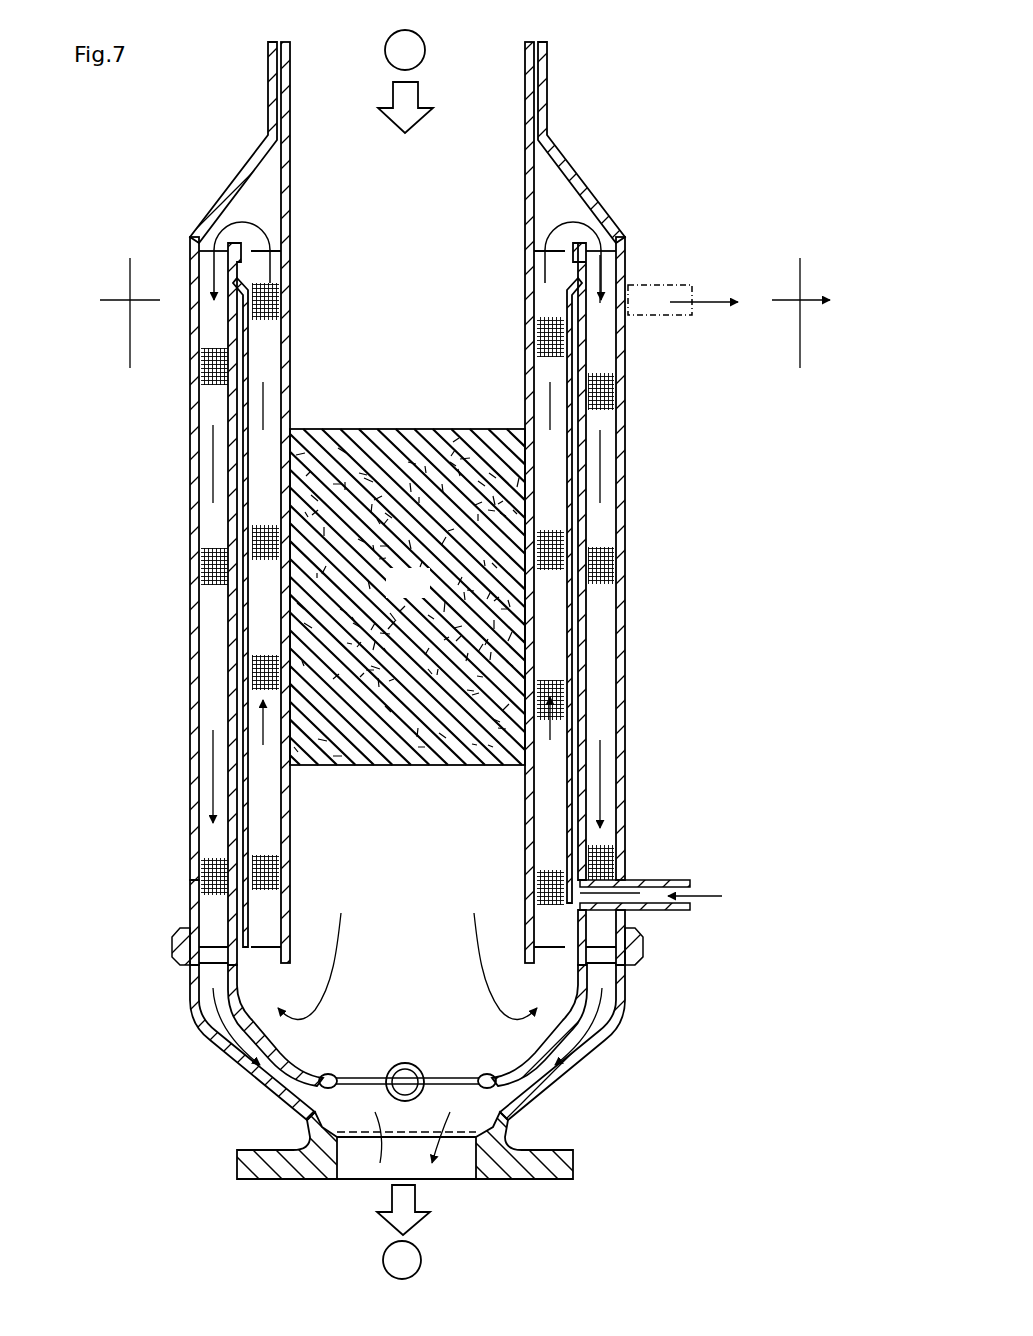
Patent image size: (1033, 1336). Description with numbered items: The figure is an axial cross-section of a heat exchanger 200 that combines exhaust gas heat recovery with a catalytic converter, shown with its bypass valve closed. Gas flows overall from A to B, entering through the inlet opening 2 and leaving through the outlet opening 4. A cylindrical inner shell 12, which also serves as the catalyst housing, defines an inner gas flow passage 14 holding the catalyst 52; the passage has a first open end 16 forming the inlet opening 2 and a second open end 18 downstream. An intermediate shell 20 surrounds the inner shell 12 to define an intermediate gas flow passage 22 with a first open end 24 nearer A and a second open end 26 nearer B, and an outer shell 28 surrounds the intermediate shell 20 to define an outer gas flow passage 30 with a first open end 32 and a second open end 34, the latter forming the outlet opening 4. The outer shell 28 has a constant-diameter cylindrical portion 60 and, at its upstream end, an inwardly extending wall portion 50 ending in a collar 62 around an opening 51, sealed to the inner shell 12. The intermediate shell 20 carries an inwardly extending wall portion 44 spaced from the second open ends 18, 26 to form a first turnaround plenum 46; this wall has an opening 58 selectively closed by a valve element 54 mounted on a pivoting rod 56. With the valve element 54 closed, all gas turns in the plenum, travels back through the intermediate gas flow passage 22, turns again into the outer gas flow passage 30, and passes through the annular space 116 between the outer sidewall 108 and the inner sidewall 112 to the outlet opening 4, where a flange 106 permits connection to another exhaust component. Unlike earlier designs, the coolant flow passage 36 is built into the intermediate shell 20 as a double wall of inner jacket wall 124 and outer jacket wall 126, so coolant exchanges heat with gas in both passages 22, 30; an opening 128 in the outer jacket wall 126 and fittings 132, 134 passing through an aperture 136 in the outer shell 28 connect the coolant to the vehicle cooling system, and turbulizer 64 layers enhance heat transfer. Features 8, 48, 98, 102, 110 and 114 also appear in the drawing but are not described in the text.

The inlet opening 2 is at (308, 48).
The outlet opening 4 is at (453, 1180).
The section line 8 is at (465, 313).
The inner shell 12 is at (535, 200).
The inner gas flow passage 14 is at (396, 386).
The first open end 16 is at (482, 46).
The second open end 18 is at (597, 990).
The intermediate shell 20 is at (233, 277).
The intermediate gas flow passage 22 is at (265, 612).
The first open end 24 is at (272, 233).
The second open end 26 is at (263, 952).
The outer shell 28 is at (190, 445).
The outer gas flow passage 30 is at (612, 622).
The first open end 32 is at (607, 250).
The second open end 34 is at (493, 1098).
The coolant flow passage 36 is at (235, 718).
The inwardly extending wall portion 44 is at (283, 1067).
The first turnaround plenum 46 is at (550, 1012).
The annular chamber 48 is at (550, 180).
The inwardly extending wall portion 50 is at (212, 238).
The opening 51 is at (540, 36).
The catalyst 52 is at (396, 596).
The valve element 54 is at (367, 1077).
The pivoting rod 56 is at (400, 1070).
The opening 58 is at (410, 1066).
The cylindrical portion 60 is at (200, 884).
The collar 62 is at (268, 70).
The turbulizer 64 is at (545, 703).
The fitting 98 is at (640, 935).
The flange 102 is at (577, 1172).
The flange 106 is at (258, 1181).
The outer sidewall 108 is at (590, 1073).
The collar 110 is at (638, 950).
The inner sidewall 112 is at (245, 1007).
The fitting 114 is at (213, 958).
The space 116 is at (217, 1033).
The inner jacket wall 124 is at (567, 433).
The outer jacket wall 126 is at (587, 478).
The opening 128 is at (640, 888).
The fitting 132 is at (697, 882).
The fitting 134 is at (685, 282).
The aperture 136 is at (625, 912).
The heat exchanger 200 is at (612, 128).